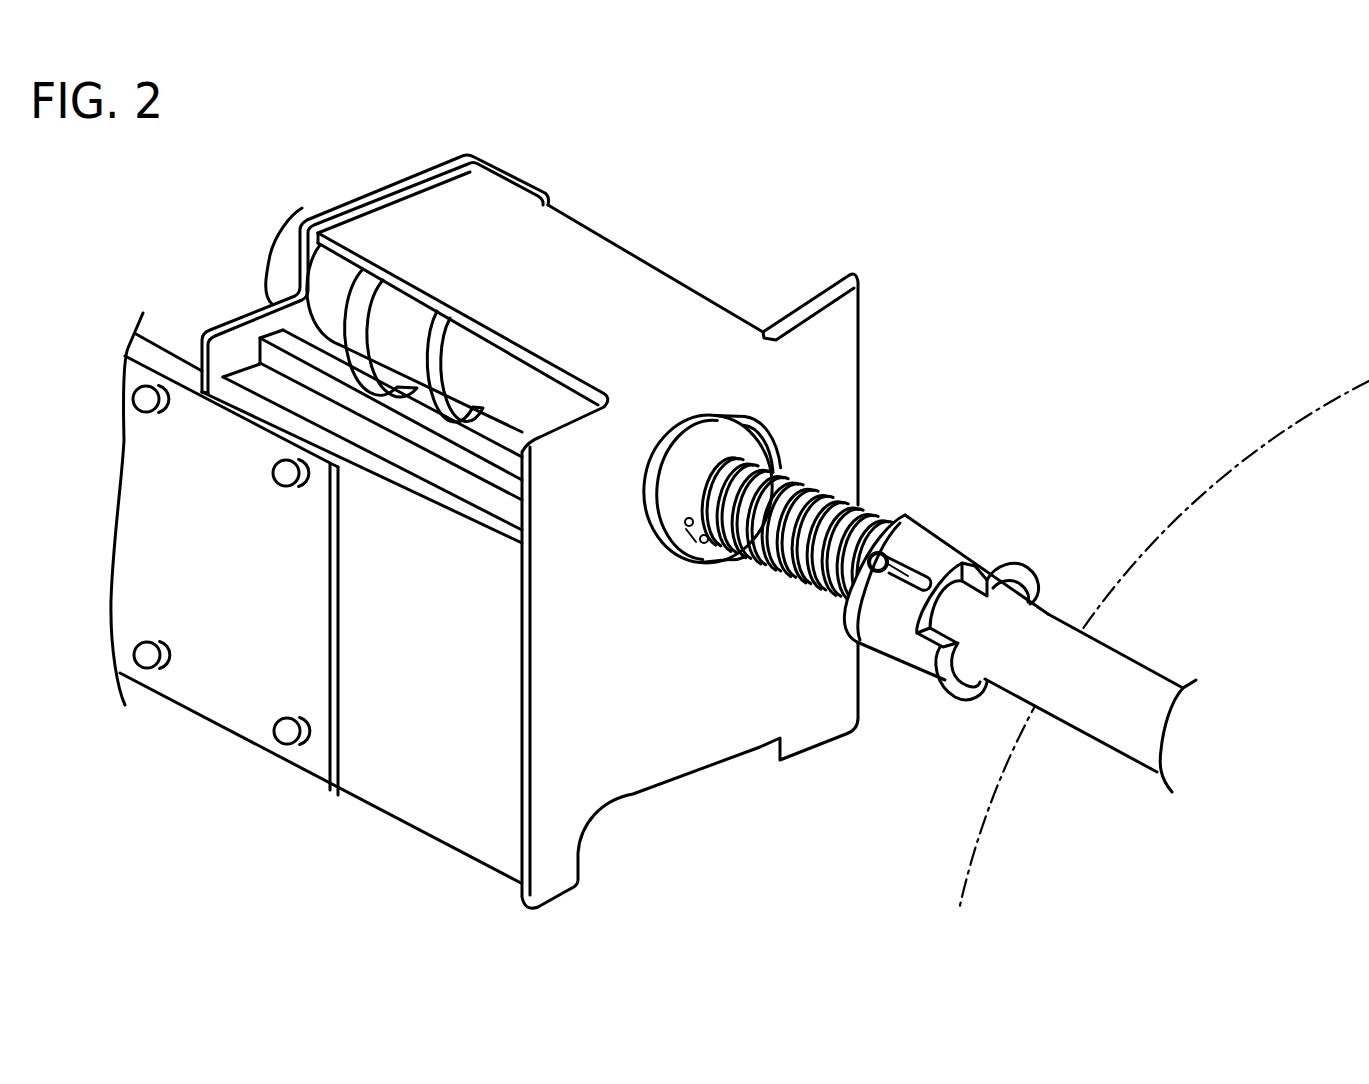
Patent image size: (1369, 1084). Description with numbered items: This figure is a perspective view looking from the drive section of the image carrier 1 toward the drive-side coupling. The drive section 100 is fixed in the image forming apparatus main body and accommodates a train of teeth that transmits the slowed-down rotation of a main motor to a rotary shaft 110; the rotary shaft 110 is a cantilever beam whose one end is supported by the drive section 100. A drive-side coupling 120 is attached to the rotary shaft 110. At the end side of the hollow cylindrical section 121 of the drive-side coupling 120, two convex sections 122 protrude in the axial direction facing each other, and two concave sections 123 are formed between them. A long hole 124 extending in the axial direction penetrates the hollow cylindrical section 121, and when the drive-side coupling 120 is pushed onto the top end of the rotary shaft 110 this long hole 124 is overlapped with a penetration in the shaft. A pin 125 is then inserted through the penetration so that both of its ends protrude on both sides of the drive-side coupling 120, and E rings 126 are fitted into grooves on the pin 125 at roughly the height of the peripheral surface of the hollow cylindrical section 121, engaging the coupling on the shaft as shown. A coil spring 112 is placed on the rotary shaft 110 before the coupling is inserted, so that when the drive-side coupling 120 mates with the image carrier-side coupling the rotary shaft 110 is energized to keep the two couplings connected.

The image carrier 1 is at (1296, 420).
The drive section 100 is at (655, 246).
The rotary shaft 110 is at (1130, 670).
The coil spring 112 is at (787, 472).
The drive-side coupling 120 is at (972, 602).
The hollow cylindrical section 121 is at (993, 560).
The convex section 122 is at (1057, 572).
The concave section 123 is at (952, 577).
The long hole 124 is at (907, 577).
The pin 125 is at (895, 526).
The E ring 126 is at (840, 615).